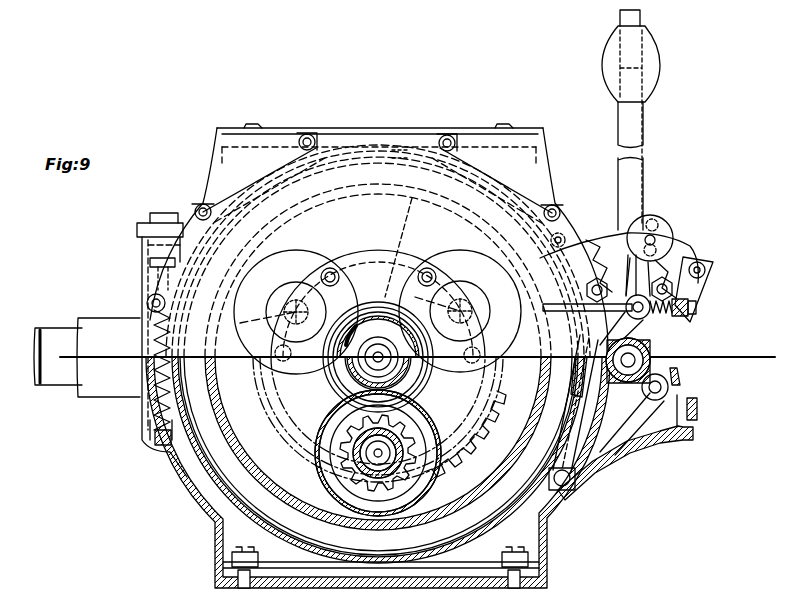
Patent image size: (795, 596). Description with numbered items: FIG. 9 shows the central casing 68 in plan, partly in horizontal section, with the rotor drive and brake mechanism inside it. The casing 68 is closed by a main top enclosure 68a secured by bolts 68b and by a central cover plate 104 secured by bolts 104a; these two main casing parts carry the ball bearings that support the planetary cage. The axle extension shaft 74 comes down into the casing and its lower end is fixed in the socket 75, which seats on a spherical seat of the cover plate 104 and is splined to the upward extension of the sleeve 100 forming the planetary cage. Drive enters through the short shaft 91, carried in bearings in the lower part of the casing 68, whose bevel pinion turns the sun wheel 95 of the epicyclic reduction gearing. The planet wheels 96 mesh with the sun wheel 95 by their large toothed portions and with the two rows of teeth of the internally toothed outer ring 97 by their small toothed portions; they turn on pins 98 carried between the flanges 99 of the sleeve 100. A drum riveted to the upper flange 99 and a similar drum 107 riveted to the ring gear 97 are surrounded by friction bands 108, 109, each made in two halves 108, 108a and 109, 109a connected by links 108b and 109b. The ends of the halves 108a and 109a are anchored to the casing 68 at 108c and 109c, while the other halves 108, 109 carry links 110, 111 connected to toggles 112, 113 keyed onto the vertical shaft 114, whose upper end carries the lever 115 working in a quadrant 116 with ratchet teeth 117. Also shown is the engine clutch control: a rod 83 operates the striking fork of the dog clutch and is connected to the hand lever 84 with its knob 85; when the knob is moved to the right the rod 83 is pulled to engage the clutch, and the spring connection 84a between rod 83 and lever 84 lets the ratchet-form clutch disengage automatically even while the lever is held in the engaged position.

The central casing 68 is at (551, 531).
The main top enclosure 68a is at (320, 197).
The bolts 68b is at (309, 134).
The axle extension shaft 74 is at (412, 325).
The socket 75 is at (360, 320).
The rod 83 is at (548, 312).
The hand lever 84 is at (662, 264).
The spring connection 84a is at (692, 318).
The knob 85 is at (670, 231).
The short shaft 91 is at (497, 410).
The sun wheel 95 is at (325, 405).
The planet wheels 96 is at (462, 430).
The internally toothed outer ring 97 is at (262, 375).
The pins 98 is at (250, 322).
The flanges 99 is at (398, 247).
The sleeve 100 is at (330, 435).
The cover plate 104 is at (367, 262).
The bolts 104a is at (330, 268).
The drum 107 is at (200, 444).
The friction band 108 is at (240, 508).
The friction band half 108a is at (400, 153).
The link 108b is at (142, 412).
The anchorage 108c is at (560, 234).
The friction band 109 is at (363, 459).
The friction band half 109a is at (439, 122).
The link 109b is at (117, 438).
The anchorage 109c is at (578, 203).
The link 110 is at (590, 470).
The link 111 is at (615, 432).
The toggle 112 is at (570, 368).
The toggle 113 is at (669, 390).
The vertical shaft 114 is at (655, 370).
The lever 115 is at (642, 183).
The quadrant 116 is at (706, 288).
The ratchet teeth 117 is at (594, 250).